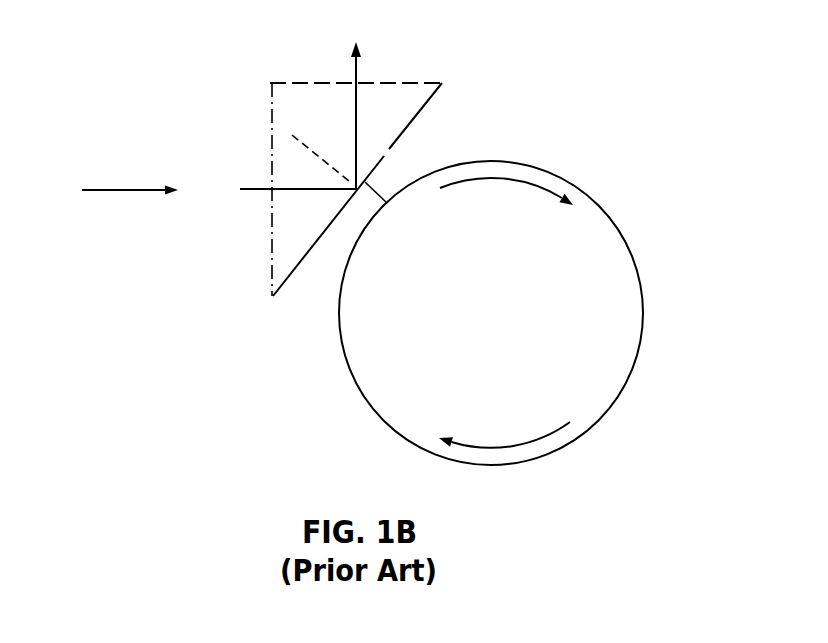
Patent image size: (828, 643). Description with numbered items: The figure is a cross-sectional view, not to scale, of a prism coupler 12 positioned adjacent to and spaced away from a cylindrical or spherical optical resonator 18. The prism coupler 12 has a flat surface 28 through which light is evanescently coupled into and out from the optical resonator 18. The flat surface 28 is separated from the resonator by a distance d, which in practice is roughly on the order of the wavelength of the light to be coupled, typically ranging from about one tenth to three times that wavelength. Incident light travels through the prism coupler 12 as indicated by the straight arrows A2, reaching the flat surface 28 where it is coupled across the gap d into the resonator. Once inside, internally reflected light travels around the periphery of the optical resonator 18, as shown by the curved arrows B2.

The prism coupler 12 is at (330, 82).
The flat surface 28 is at (441, 111).
The optical resonator 18 is at (644, 312).
The curved arrow B2 is at (529, 179).
The straight arrow A2 is at (130, 193).
The distance d is at (380, 183).